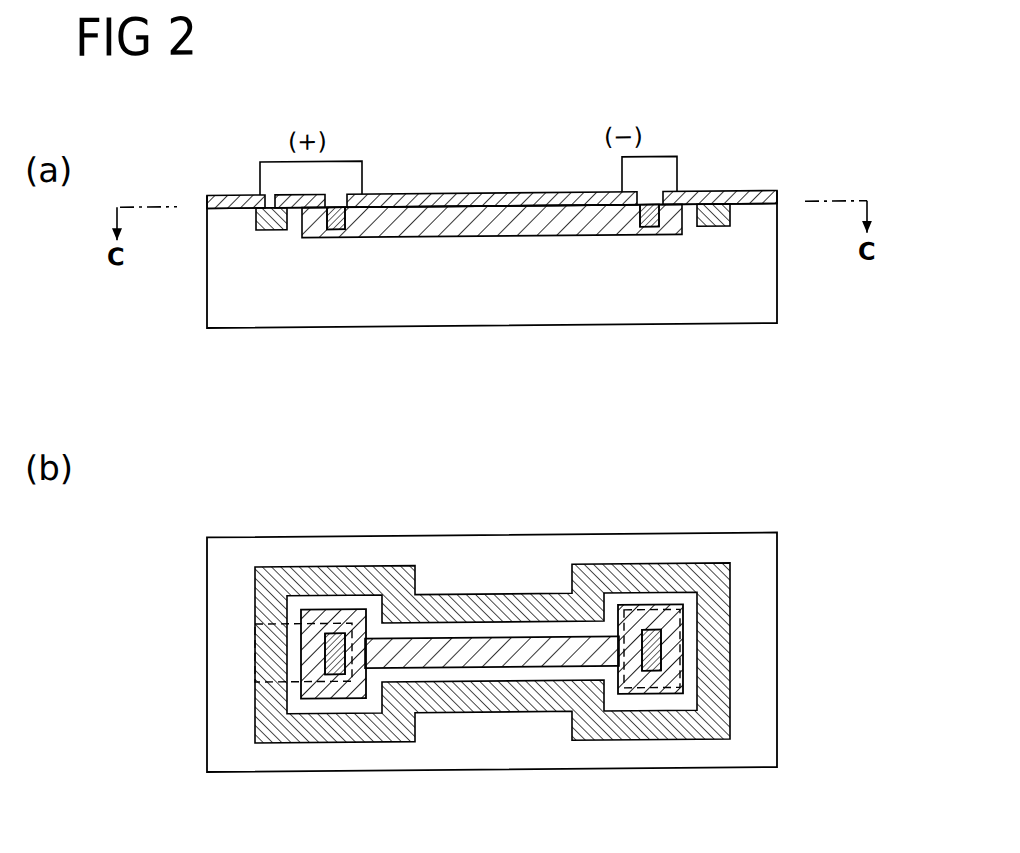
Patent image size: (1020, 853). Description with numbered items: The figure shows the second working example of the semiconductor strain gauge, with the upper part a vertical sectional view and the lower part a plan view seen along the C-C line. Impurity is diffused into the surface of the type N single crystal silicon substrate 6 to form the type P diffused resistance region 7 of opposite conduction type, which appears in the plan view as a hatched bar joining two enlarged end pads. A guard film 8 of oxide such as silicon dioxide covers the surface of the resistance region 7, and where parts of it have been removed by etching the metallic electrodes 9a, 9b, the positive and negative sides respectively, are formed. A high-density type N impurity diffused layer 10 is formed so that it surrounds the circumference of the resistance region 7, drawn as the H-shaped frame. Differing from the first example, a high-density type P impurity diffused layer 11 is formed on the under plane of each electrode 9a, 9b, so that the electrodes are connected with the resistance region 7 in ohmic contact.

The type N single crystal silicon substrate 6 is at (206, 310).
The type P diffused resistance region 7 is at (460, 210).
The guard film 8 is at (512, 194).
The electrode in positive side 9a is at (262, 158).
The electrode in negative side 9b is at (676, 157).
The high-density type N impurity diffused layer 10 is at (257, 225).
The high-density type P impurity diffused layer 11 is at (335, 206).